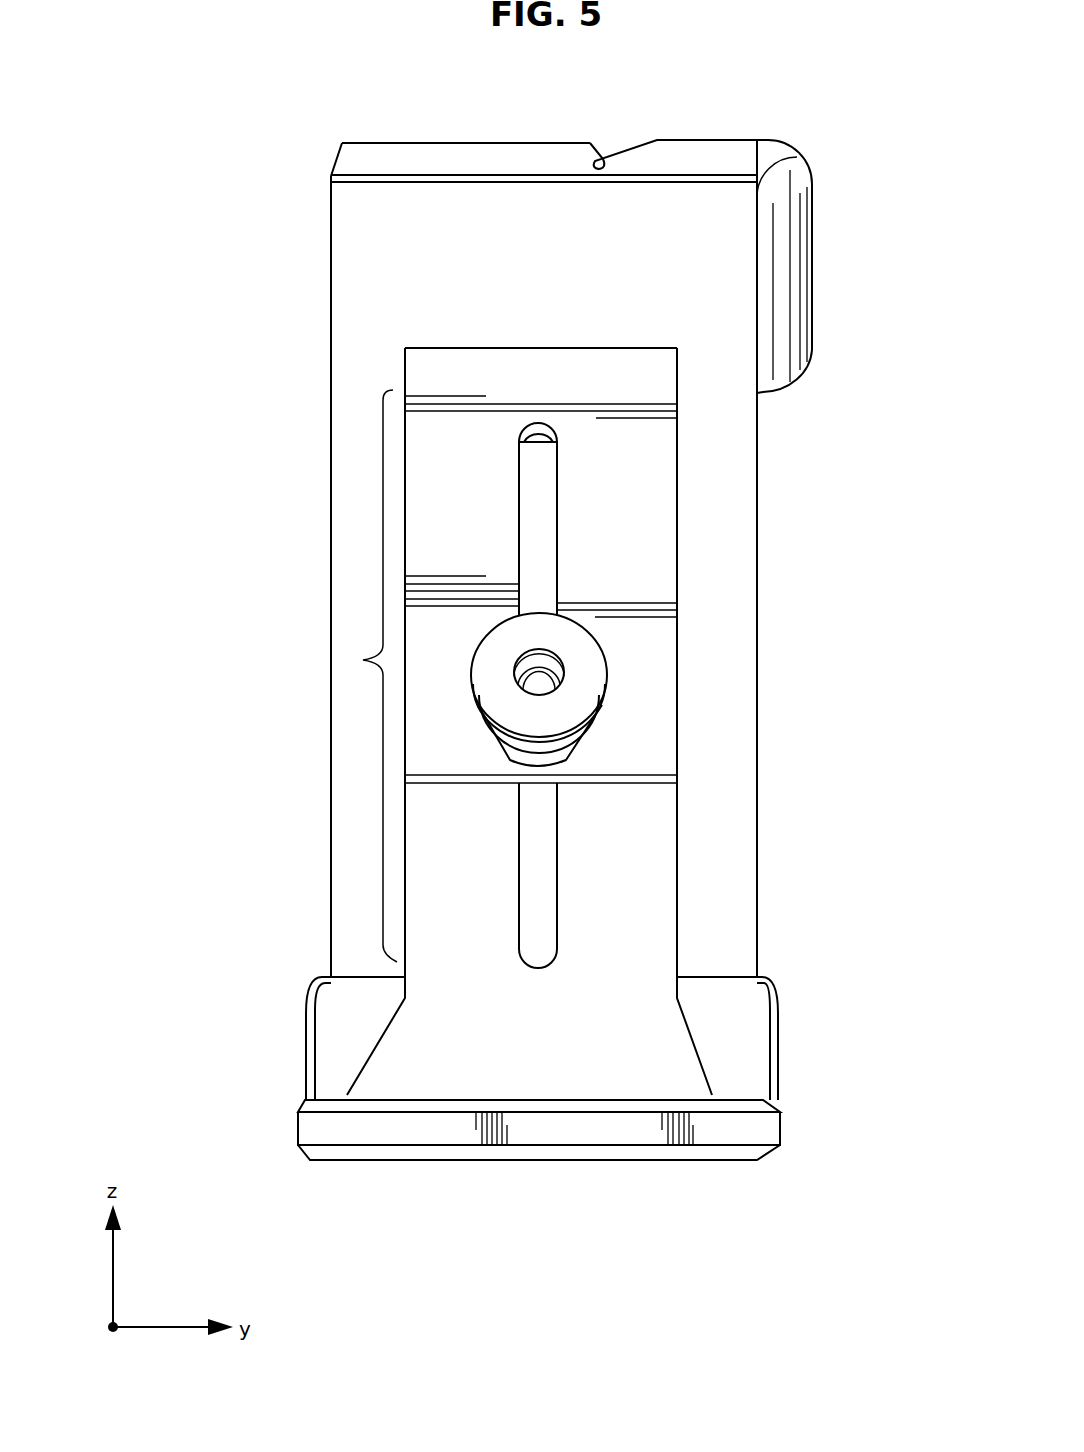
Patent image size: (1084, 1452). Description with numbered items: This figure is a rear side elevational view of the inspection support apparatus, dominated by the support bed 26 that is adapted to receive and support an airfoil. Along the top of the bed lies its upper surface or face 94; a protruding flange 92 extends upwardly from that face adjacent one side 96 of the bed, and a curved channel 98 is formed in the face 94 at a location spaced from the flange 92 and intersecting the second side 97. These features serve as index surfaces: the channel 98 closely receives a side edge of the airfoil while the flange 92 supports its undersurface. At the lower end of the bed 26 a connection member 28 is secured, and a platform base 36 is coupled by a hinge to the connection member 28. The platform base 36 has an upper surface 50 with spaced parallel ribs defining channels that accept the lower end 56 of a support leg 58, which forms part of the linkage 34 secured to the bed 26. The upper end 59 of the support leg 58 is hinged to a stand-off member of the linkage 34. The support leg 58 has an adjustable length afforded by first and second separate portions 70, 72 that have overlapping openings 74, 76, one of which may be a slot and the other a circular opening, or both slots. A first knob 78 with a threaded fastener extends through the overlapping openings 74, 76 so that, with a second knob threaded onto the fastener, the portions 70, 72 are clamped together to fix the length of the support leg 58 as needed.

The support bed 26 is at (550, 143).
The upper surface or face 94 is at (440, 143).
The curved channel 98 is at (623, 155).
The protruding flange 92 is at (807, 244).
The side 96 is at (757, 412).
The linkage 34 is at (382, 373).
The second side 97 is at (331, 392).
The upper end 59 is at (405, 445).
The support leg 58 is at (367, 676).
The lower end 56 is at (403, 902).
The first portion 70 is at (677, 510).
The second portion 72 is at (673, 897).
The opening 74 is at (543, 582).
The opening 76 is at (542, 872).
The first knob 78 is at (573, 705).
The connection member 28 is at (333, 1048).
The upper surface 50 is at (742, 1095).
The platform base 36 is at (298, 1125).